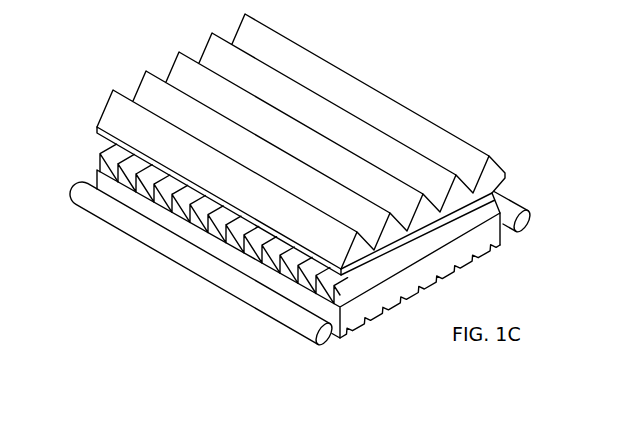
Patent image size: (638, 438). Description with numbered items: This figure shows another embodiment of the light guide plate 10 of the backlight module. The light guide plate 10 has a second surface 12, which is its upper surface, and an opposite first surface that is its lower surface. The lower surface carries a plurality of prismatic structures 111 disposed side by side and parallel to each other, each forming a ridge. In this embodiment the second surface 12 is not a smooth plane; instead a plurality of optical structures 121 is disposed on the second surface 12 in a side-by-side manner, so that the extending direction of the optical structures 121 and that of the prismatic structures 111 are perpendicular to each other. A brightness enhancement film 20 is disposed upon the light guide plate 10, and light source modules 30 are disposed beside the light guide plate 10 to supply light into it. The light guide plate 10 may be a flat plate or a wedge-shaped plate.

The light guide plate 10 is at (296, 254).
The prismatic structures 111 is at (492, 252).
The second surface 12 is at (188, 211).
The optical structures 121 is at (106, 166).
The brightness enhancement film 20 is at (97, 128).
The light source module 30 is at (102, 208).